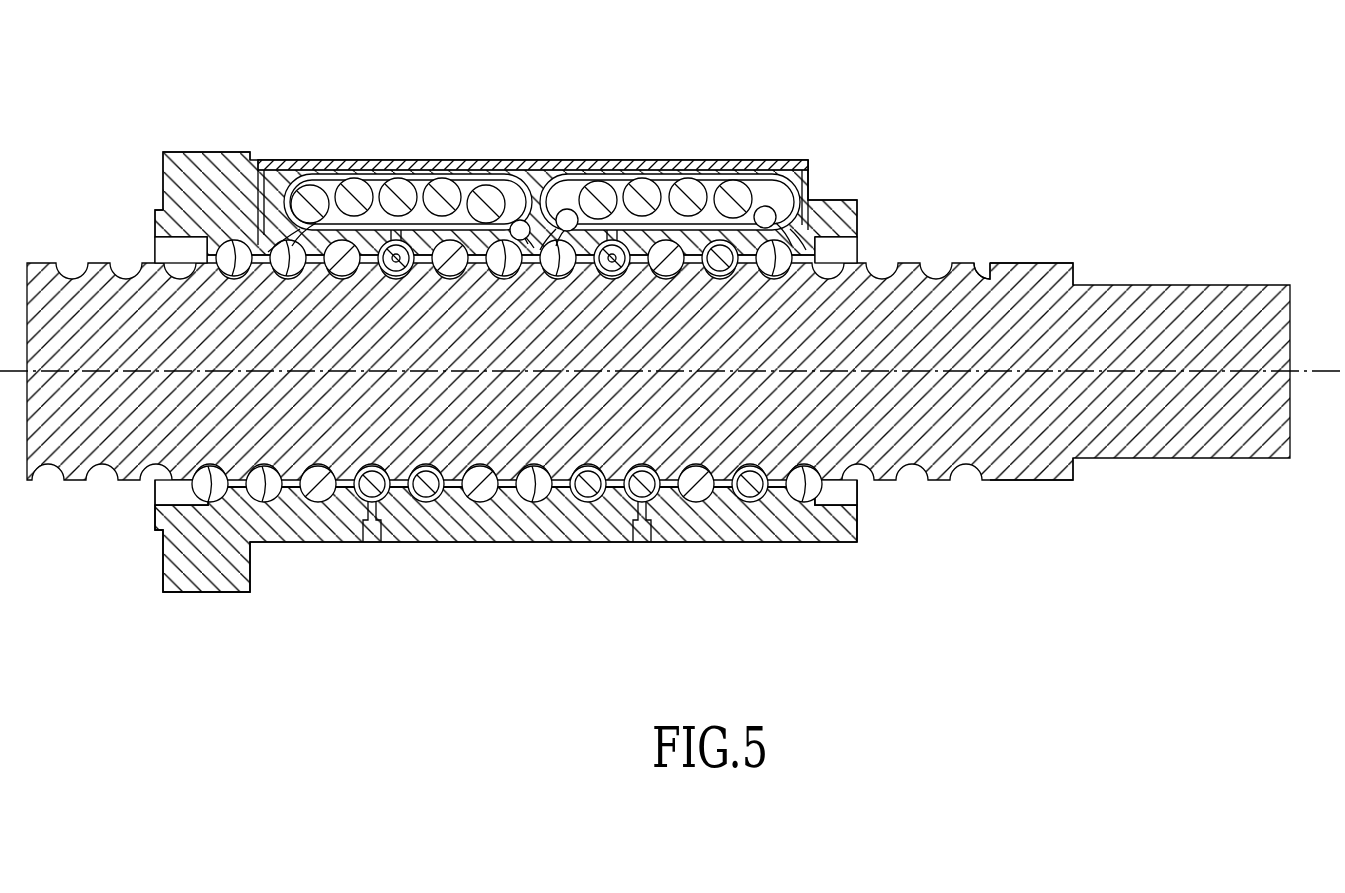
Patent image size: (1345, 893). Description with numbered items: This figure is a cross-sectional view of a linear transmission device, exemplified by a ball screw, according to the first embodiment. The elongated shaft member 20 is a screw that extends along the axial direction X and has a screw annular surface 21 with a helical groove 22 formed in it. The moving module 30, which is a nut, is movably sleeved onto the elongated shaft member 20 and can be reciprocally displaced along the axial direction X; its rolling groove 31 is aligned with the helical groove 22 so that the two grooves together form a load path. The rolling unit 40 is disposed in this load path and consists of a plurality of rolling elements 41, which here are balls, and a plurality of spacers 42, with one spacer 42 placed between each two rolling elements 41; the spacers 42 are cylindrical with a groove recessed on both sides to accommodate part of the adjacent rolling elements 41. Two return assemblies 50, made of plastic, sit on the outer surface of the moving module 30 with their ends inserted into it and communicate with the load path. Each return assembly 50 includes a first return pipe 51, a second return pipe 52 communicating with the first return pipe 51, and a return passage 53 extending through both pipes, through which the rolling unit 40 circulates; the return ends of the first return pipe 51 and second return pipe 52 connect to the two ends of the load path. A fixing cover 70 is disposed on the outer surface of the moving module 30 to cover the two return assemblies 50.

The elongated shaft member 20 is at (1048, 263).
The screw annular surface 21 is at (1007, 262).
The helical groove 22 is at (975, 262).
The moving module 30 is at (198, 151).
The rolling groove 31 is at (812, 245).
The rolling unit 40 is at (674, 154).
The rolling elements 41 is at (588, 180).
The spacers 42 is at (628, 178).
The return assemblies 50 is at (533, 162).
The first return pipe 51 is at (278, 185).
The second return pipe 52 is at (512, 180).
The return passage 53 is at (370, 187).
The fixing cover 70 is at (745, 163).
The axial direction X is at (1318, 370).